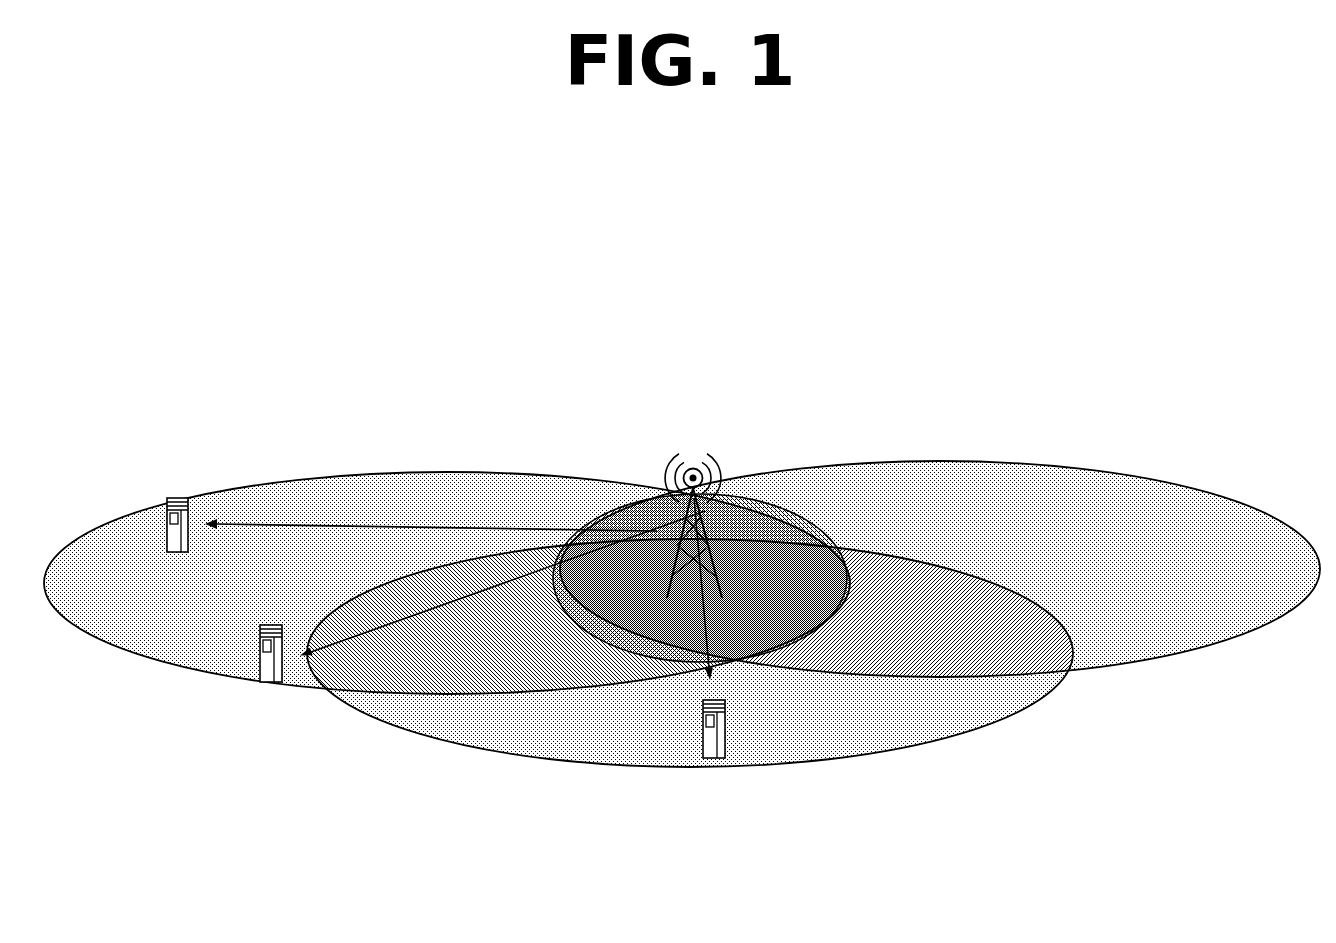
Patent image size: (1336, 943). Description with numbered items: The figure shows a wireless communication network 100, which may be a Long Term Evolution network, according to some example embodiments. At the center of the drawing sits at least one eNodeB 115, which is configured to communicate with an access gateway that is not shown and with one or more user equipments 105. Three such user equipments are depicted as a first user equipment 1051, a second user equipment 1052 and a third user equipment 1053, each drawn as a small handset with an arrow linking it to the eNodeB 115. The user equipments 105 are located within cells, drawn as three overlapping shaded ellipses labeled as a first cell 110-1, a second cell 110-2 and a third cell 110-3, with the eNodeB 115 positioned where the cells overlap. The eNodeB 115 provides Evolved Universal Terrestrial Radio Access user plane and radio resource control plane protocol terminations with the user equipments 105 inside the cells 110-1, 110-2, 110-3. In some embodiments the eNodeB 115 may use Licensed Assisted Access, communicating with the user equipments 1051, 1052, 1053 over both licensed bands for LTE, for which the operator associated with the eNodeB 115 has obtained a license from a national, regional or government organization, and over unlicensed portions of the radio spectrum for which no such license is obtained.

The wireless communication network 100 is at (1106, 294).
The user equipments 105 is at (400, 635).
The first user equipment 1051 is at (166, 503).
The second user equipment 1052 is at (260, 673).
The third user equipment 1053 is at (705, 750).
The first cell 110-1 is at (450, 472).
The second cell 110-2 is at (870, 748).
The third cell 110-3 is at (958, 461).
The eNodeB 115 is at (705, 468).